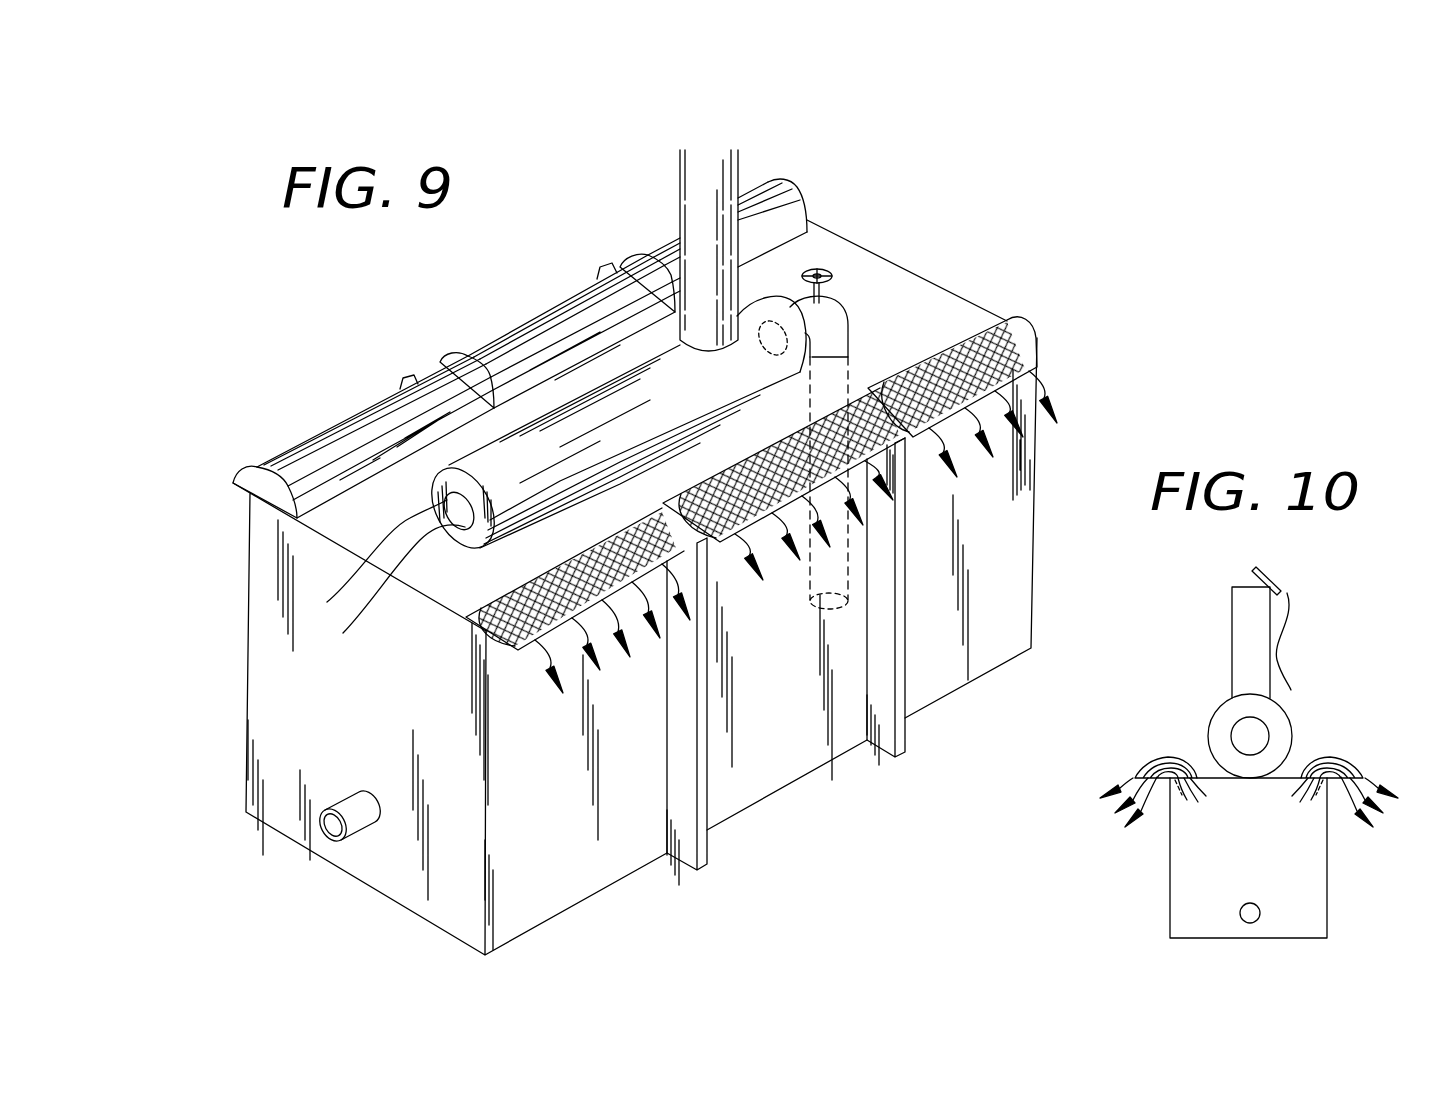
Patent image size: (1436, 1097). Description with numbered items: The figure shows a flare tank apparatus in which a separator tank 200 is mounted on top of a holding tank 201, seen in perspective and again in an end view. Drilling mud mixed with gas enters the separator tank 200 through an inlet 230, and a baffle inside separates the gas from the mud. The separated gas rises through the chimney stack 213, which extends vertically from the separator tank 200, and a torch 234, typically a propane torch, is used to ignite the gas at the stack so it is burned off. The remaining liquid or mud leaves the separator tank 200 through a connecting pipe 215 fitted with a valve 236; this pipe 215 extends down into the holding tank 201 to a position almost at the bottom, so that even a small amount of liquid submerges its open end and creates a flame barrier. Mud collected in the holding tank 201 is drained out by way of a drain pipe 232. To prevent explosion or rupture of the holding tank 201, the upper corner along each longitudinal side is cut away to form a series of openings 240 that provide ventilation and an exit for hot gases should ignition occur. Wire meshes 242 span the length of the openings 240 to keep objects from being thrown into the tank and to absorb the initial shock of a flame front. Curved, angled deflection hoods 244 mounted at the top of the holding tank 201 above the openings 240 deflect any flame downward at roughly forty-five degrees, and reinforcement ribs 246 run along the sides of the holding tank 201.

In FIG. 9, the separator tank 200 is at (555, 418).
In FIG. 10, the separator tank 200 is at (1291, 718).
In FIG. 9, the holding tank 201 is at (377, 517).
In FIG. 10, the holding tank 201 is at (1168, 880).
In FIG. 9, the chimney stack 213 is at (676, 212).
In FIG. 10, the chimney stack 213 is at (1231, 636).
In FIG. 9, the connecting pipe 215 is at (852, 308).
In FIG. 9, the inlet 230 is at (324, 618).
In FIG. 9, the drain pipe 232 is at (327, 832).
In FIG. 10, the drain pipe 232 is at (1260, 910).
In FIG. 10, the torch 234 is at (1288, 578).
In FIG. 9, the valve 236 is at (828, 268).
In FIG. 9, the openings 240 is at (497, 628).
In FIG. 10, the openings 240 is at (1177, 781).
In FIG. 9, the wire meshes 242 is at (932, 357).
In FIG. 9, the deflection hood 244 is at (527, 315).
In FIG. 10, the deflection hood 244 is at (1160, 760).
In FIG. 9, the reinforcement ribs 246 is at (600, 264).